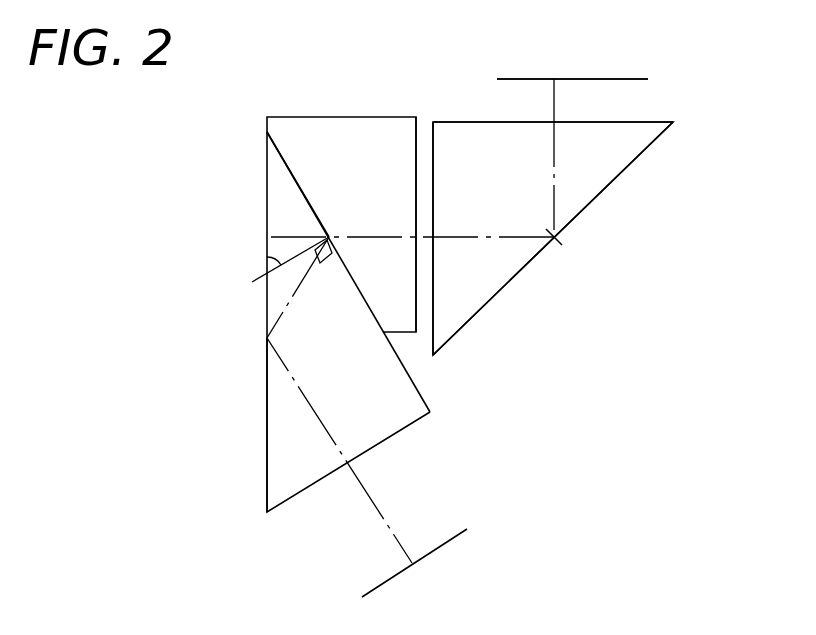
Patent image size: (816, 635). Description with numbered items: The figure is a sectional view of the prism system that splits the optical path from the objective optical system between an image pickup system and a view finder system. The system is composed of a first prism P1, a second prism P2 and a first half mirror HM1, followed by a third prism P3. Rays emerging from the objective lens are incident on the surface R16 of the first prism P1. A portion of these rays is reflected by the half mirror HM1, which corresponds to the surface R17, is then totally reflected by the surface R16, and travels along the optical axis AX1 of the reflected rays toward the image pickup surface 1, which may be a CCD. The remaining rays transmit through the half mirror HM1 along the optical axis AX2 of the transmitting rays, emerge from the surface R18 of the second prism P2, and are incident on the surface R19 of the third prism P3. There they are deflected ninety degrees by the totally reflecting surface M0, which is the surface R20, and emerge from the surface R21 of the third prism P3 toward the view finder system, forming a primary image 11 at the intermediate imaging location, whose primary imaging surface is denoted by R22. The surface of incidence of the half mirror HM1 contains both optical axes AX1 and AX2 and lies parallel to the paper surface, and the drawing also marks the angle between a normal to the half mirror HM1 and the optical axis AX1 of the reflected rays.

The image pickup surface 1 is at (451, 541).
The primary image 11 is at (517, 79).
The first prism P1 is at (283, 403).
The second prism P2 is at (350, 133).
The third prism P3 is at (488, 278).
The first half mirror HM1 is at (374, 318).
The optical axis of the reflected rays AX1 is at (292, 302).
The optical axis of the transmitting rays AX2 is at (459, 235).
The totally reflecting surface M0 is at (558, 241).
The surface of the first prism R16 is at (268, 481).
The half mirror surface R17 is at (280, 151).
The surface of the second prism R18 is at (417, 140).
The surface of the third prism R19 is at (434, 332).
The reflecting surface R20 is at (630, 166).
The surface of the third prism R21 is at (628, 120).
The primary imaging surface R22 is at (617, 79).